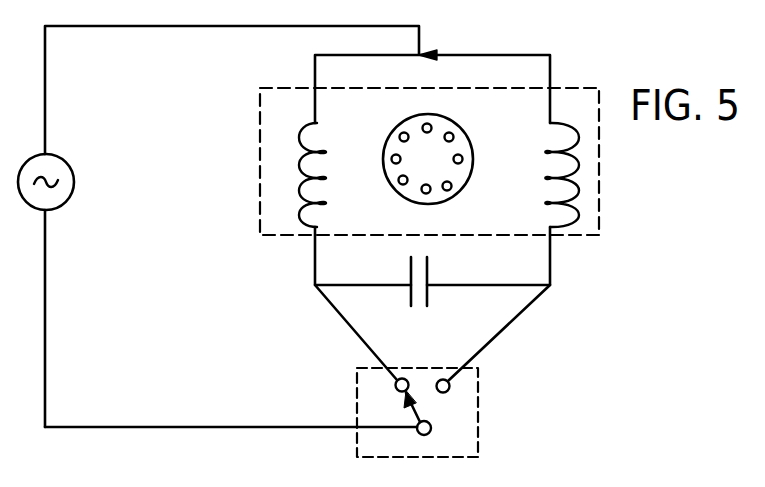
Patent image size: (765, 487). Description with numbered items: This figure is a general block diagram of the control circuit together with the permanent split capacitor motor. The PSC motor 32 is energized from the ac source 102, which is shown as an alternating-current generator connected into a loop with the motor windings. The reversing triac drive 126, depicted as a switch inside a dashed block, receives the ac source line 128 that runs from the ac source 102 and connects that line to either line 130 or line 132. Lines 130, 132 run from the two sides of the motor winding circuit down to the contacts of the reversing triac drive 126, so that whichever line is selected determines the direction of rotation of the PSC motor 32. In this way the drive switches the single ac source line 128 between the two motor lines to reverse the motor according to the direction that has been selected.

The ac source 102 is at (74, 163).
The PSC motor 32 is at (597, 88).
The line 130 is at (343, 320).
The line 132 is at (510, 326).
The ac source line 128 is at (163, 427).
The reversing triac drive 126 is at (478, 427).